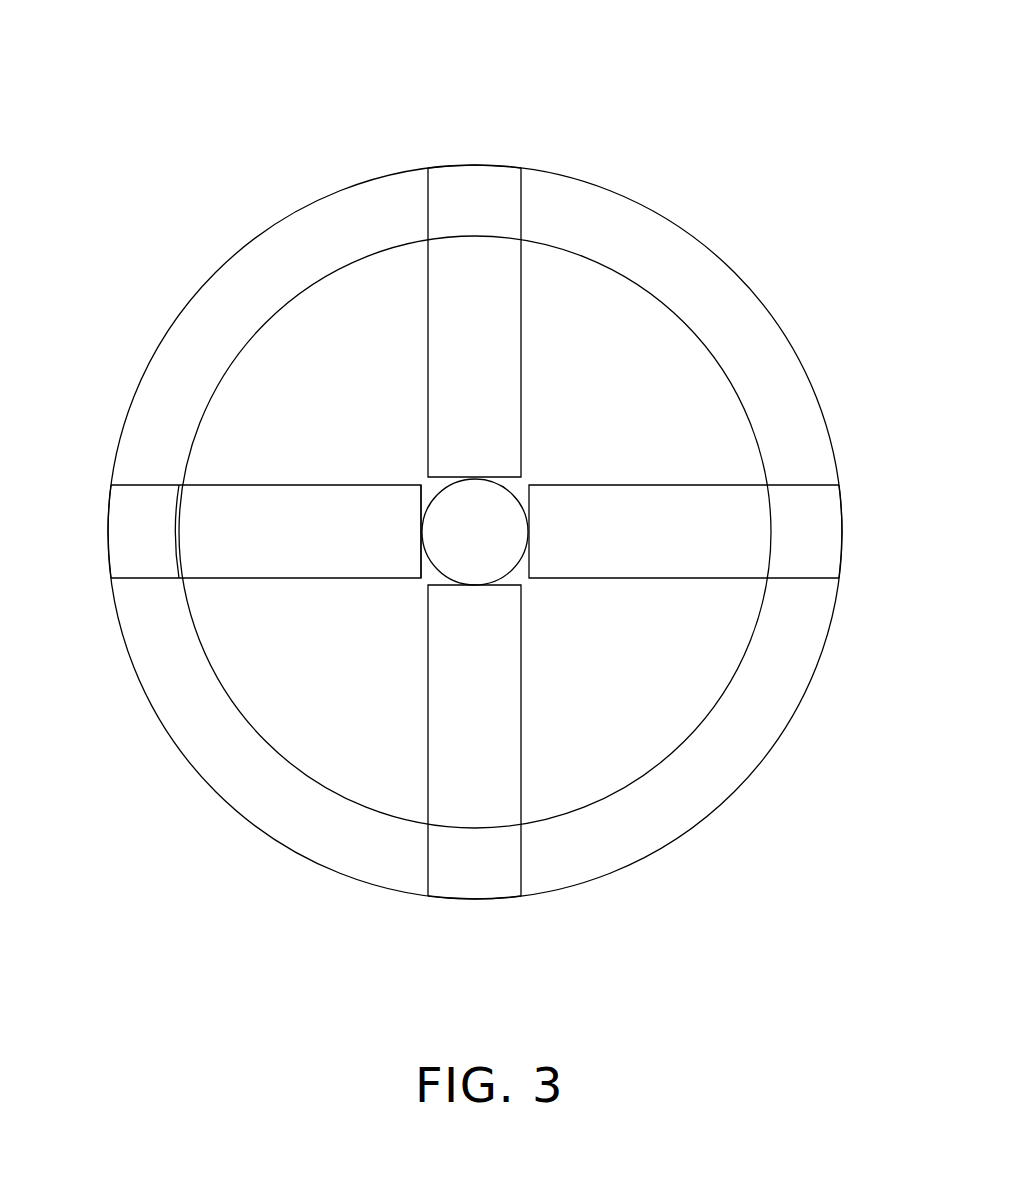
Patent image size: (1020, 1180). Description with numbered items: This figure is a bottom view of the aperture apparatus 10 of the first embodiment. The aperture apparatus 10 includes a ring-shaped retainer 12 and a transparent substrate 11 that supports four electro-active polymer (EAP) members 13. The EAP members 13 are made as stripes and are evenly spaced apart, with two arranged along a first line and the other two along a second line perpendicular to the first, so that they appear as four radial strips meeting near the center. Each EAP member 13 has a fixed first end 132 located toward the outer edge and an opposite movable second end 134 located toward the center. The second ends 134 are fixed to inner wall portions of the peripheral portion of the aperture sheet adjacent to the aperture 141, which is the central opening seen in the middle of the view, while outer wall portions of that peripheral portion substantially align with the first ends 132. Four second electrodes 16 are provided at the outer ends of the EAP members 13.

The aperture apparatus 10 is at (405, 70).
The transparent substrate 11 is at (642, 713).
The ring-shaped retainer 12 is at (635, 243).
The electro-active polymer (EAP) members 13 is at (448, 315).
The second electrodes 16 is at (473, 192).
The first end 132 is at (192, 540).
The second end 134 is at (408, 528).
The aperture 141 is at (508, 500).